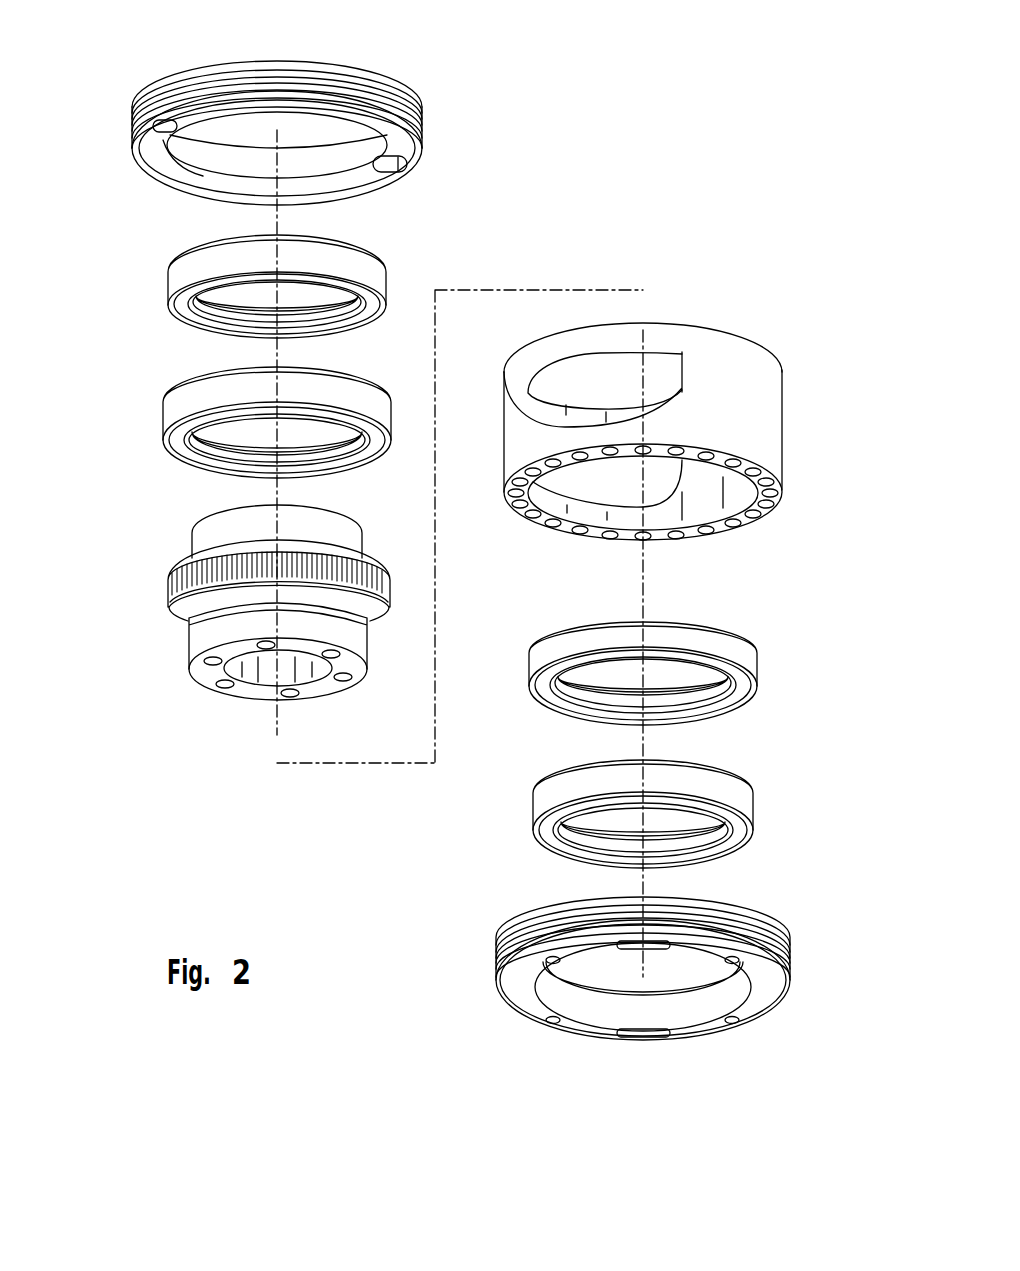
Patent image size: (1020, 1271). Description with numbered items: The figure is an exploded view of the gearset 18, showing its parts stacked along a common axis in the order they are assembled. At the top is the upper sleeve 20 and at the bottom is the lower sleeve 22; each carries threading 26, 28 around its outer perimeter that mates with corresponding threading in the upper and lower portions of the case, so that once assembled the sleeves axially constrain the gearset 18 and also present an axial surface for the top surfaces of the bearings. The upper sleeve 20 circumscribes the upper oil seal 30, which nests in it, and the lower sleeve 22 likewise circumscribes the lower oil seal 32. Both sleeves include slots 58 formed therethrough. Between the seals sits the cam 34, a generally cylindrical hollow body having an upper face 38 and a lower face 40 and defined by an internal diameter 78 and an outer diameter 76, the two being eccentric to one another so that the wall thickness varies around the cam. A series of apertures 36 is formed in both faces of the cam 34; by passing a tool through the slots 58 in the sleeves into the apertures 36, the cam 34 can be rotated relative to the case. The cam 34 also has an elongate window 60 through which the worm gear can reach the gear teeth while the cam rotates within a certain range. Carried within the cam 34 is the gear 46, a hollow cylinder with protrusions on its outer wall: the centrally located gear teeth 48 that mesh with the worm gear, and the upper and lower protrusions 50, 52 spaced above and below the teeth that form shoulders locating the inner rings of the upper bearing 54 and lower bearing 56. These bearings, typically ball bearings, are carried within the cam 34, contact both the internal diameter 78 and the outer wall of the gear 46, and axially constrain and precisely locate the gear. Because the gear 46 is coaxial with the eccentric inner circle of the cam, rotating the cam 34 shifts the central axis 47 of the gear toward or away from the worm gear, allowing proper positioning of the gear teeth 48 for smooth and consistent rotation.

The gearset 18 is at (678, 114).
The upper sleeve 20 is at (135, 92).
The lower sleeve 22 is at (779, 914).
The threading 26 is at (422, 136).
The threading 28 is at (497, 955).
The upper oil seal 30 is at (160, 270).
The lower oil seal 32 is at (513, 815).
The cam 34 is at (785, 331).
The apertures 36 is at (765, 507).
The upper face 38 is at (686, 330).
The lower face 40 is at (520, 512).
The gear 46 is at (152, 676).
The central axis 47 is at (275, 734).
The gear teeth 48 is at (168, 592).
The upper protrusion 50 is at (192, 557).
The lower protrusion 52 is at (188, 620).
The upper bearing 54 is at (154, 403).
The lower bearing 56 is at (770, 690).
The slots 58 is at (392, 165).
The elongate window 60 is at (493, 435).
The outer diameter 76 is at (783, 412).
The internal diameter 78 is at (697, 507).